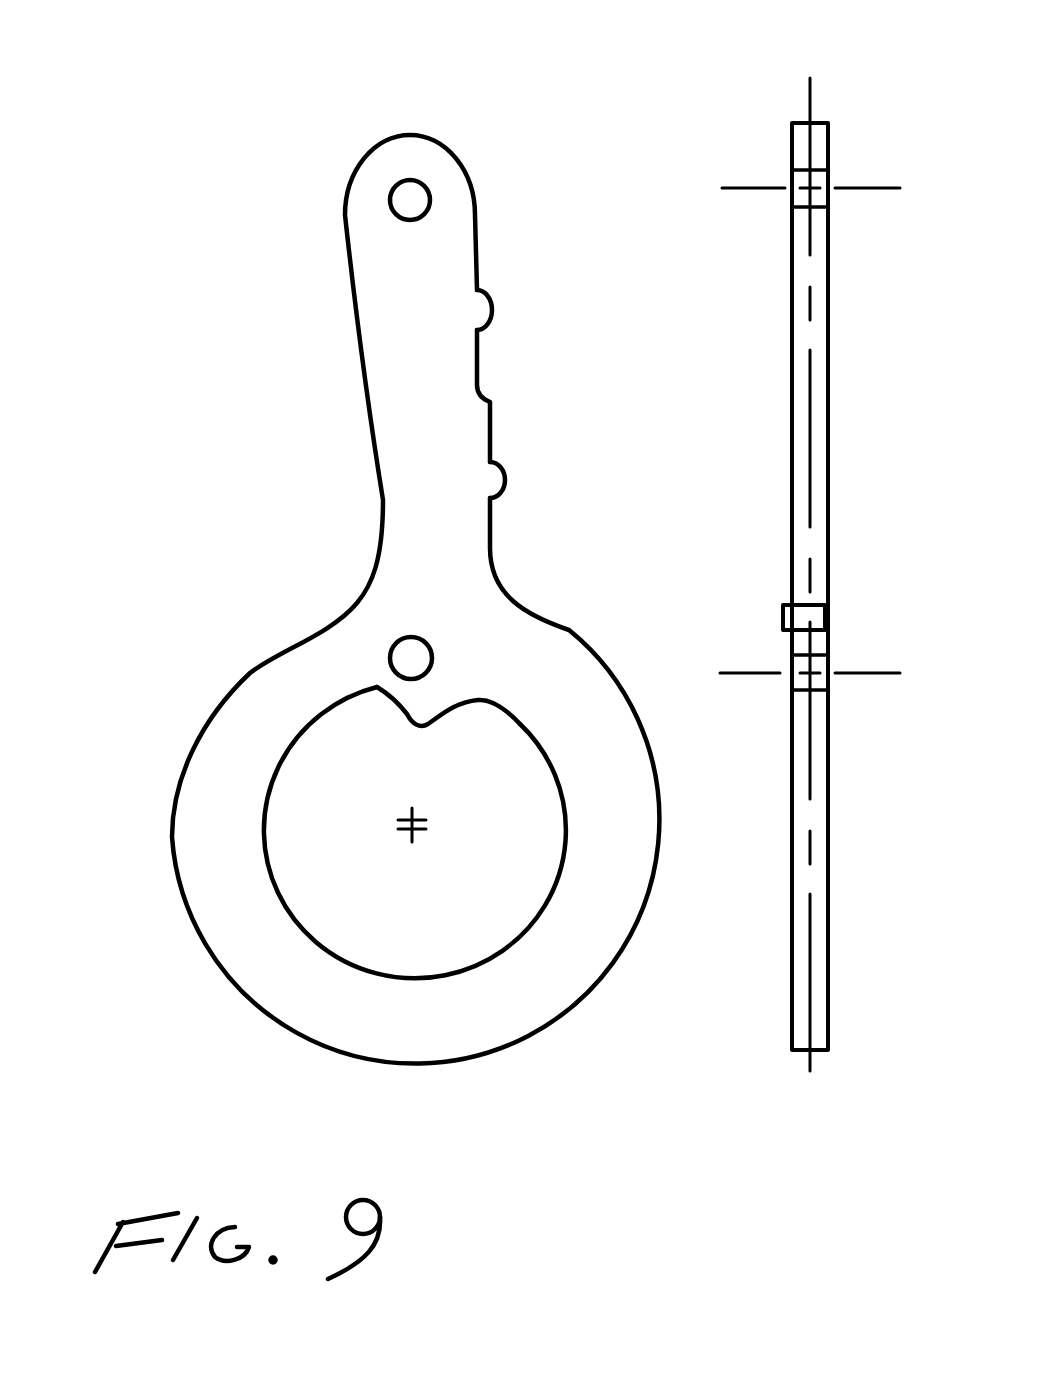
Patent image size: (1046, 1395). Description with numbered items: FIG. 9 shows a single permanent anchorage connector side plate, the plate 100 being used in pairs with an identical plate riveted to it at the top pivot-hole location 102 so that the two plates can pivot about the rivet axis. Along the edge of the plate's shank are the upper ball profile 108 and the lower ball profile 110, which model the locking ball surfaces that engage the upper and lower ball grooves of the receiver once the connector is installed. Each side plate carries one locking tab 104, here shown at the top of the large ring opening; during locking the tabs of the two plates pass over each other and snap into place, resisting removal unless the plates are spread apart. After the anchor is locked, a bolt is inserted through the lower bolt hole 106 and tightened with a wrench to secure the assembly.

The tag body 100 is at (490, 425).
The top pivot-hole location 102 is at (423, 180).
The locking tab 104 is at (434, 703).
The lower bolt hole 106 is at (393, 650).
The upper ball profile 108 is at (492, 297).
The lower ball profile 110 is at (518, 476).